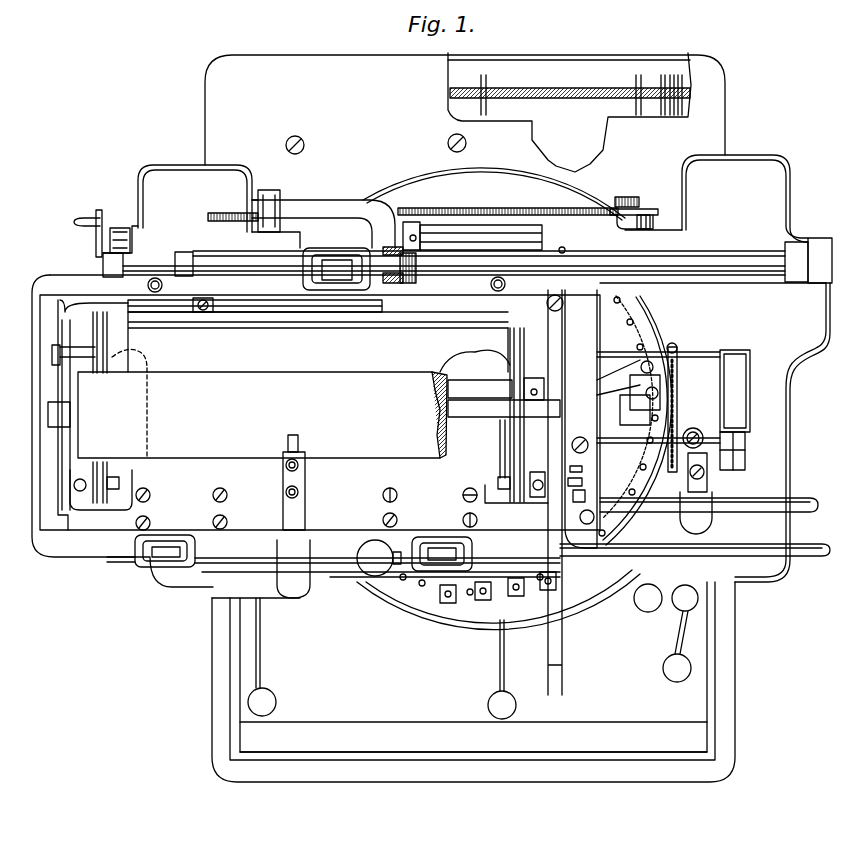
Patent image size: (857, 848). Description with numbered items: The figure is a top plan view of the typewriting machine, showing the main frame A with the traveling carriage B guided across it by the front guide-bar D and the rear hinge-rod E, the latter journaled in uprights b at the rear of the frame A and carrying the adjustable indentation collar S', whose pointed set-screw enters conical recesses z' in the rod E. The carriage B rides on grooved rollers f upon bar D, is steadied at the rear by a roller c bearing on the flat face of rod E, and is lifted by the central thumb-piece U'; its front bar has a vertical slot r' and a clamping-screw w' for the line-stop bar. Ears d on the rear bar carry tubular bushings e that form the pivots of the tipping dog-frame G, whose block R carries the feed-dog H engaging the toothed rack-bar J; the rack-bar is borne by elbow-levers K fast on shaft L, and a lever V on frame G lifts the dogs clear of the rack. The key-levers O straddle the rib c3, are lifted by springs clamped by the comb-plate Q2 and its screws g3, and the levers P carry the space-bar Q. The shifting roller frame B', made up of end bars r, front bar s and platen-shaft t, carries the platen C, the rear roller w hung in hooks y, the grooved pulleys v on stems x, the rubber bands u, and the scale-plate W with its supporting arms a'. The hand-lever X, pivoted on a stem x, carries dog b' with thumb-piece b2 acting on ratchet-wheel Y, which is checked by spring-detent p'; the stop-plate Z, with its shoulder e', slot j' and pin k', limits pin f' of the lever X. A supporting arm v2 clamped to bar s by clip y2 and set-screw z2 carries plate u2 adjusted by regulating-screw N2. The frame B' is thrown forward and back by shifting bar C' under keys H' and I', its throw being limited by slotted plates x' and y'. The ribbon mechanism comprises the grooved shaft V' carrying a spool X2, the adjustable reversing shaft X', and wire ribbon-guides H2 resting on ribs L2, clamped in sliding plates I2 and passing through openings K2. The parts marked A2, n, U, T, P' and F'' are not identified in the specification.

The main frame A is at (396, 108).
The shift lever handle A2 is at (84, 215).
The ribbon-reversing shaft X' is at (319, 248).
The traveling carriage B is at (428, 417).
The upright b is at (446, 251).
The tubular bushing e is at (288, 273).
The perforated lug or ear d is at (185, 252).
The feed-dog H is at (261, 212).
The rack n is at (255, 208).
The block R is at (268, 196).
The tipping frame G is at (345, 206).
The supporting-roller c is at (333, 263).
The rack-bar J is at (418, 216).
The rib c3 is at (563, 96).
The key-lever O is at (636, 80).
The comb-plate Q2 is at (612, 138).
The bolt or screw g3 is at (318, 140).
The knurled nut U is at (627, 189).
The rod or shaft L is at (660, 212).
The bracket T is at (621, 230).
The elbow-lever K is at (646, 230).
The hinge-rod E is at (748, 258).
The adjustable collar S' is at (785, 297).
The grooved pulley v is at (76, 345).
The band or belt u is at (105, 352).
The roller or cylinder w is at (466, 356).
The hook-shaped hanger y is at (566, 320).
The spring-detent p' is at (536, 379).
The scale-plate W is at (452, 393).
The platen C is at (262, 415).
The lever V is at (101, 464).
The supporting arm of scale-plate a' is at (313, 449).
The end bar r is at (313, 415).
The stem x is at (292, 478).
The plate u2 is at (283, 470).
The supporting-arm v2 is at (292, 435).
The regulating-screw N2 is at (310, 462).
The set-screw z2 is at (305, 496).
The lever or clip y2 is at (293, 515).
The shifting roller frame B' is at (317, 412).
The front bar s is at (306, 509).
The guiding roller f is at (303, 539).
The plate P' is at (352, 522).
The clamping-screw w' is at (379, 558).
The thumb-piece U' is at (293, 569).
The vertical slot r' is at (333, 584).
The platen-shaft t is at (478, 411).
The ribbon-guide H2 is at (700, 341).
The dog b' is at (528, 471).
The thumb-piece b2 is at (545, 505).
The stud or pin f' is at (547, 522).
The hand-lever X is at (555, 492).
The ratchet-wheel Y is at (581, 416).
The pin or stud k' is at (579, 459).
The slot j' is at (600, 460).
The stop-plate Z is at (590, 471).
The shoulder e' is at (581, 483).
The conical hole or recess z' is at (586, 506).
The raised rib L2 is at (683, 407).
The pawl mechanism F'' is at (628, 401).
The sliding plate I2 is at (725, 389).
The ribbon-spool X2 is at (740, 406).
The slotted plate y' is at (695, 428).
The elongated opening K2 is at (745, 440).
The spool shaft V' is at (759, 465).
The slotted plate x' is at (705, 493).
The shifting bar C' is at (709, 495).
The front guide-bar D is at (810, 548).
The finger-key I' is at (671, 633).
The space-bar lever P is at (460, 682).
The finger-key H' is at (269, 657).
The spacing-bar Q is at (628, 731).